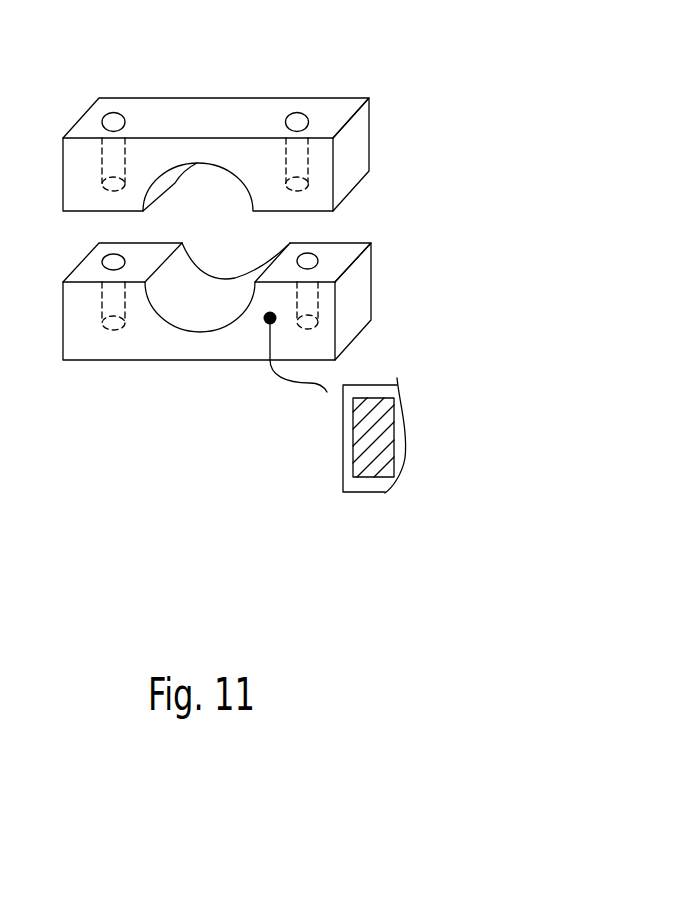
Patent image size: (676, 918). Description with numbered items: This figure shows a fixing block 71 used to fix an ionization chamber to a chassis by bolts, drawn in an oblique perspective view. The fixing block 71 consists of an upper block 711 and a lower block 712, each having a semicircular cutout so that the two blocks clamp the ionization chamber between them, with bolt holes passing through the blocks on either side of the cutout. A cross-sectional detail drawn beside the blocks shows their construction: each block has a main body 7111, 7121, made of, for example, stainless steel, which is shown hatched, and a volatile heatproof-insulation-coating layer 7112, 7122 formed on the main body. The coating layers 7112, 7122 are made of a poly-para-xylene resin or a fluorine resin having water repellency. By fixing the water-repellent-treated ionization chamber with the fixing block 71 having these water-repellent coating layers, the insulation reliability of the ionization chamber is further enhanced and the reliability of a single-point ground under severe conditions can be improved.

The fixing block 71 is at (294, 233).
The upper block 711 is at (243, 112).
The lower block 712 is at (135, 325).
The volatile heatproof-insulation-coating layer 7112 is at (491, 412).
The volatile heatproof-insulation-coating layer 7122 is at (372, 378).
The main body 7111 is at (448, 496).
The main body 7121 is at (380, 463).